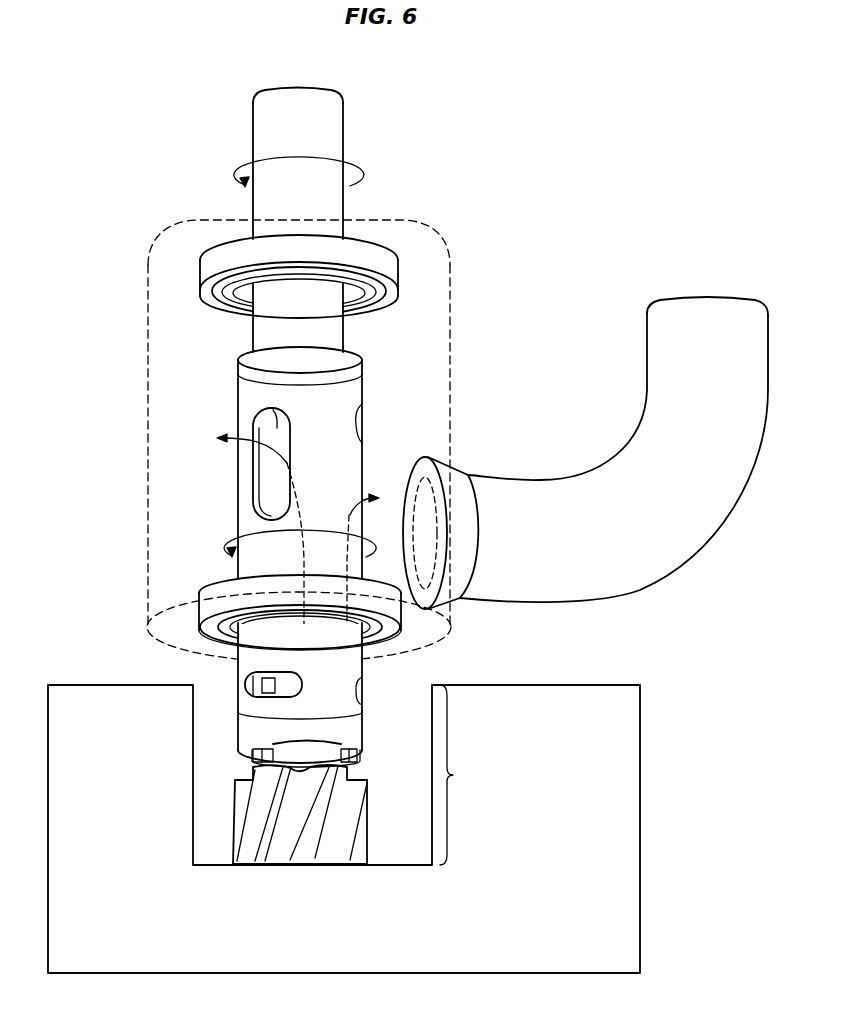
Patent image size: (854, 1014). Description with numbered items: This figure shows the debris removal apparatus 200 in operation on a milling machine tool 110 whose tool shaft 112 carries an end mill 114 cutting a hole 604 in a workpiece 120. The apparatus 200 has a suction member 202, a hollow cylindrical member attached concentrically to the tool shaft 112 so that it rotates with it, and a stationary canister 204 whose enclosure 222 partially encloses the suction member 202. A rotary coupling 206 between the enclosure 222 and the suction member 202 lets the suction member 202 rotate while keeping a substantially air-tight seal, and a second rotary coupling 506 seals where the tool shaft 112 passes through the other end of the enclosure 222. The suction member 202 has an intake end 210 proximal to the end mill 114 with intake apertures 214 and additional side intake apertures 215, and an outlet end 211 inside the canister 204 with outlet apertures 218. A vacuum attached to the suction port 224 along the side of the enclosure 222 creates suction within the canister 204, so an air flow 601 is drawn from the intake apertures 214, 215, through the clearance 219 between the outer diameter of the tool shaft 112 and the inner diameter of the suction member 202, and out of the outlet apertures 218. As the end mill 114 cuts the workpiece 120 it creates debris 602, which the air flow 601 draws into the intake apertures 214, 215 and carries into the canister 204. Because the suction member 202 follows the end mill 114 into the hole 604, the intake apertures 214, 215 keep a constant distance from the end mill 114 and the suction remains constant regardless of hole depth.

The cutting tool 110 is at (292, 86).
The tool shaft 112 is at (333, 131).
The end mill 114 is at (335, 835).
The workpiece 120 is at (587, 685).
The debris removal apparatus 200 is at (513, 169).
The suction member 202 is at (240, 655).
The canister 204 is at (111, 428).
The rotary coupling 206 is at (390, 640).
The intake end 210 is at (353, 737).
The outlet end 211 is at (352, 363).
The intake apertures 214 is at (300, 752).
The additional intake apertures 215 is at (357, 694).
The outlet apertures 218 is at (360, 410).
The clearance 219 is at (267, 646).
The enclosure 222 is at (452, 352).
The suction port 224 is at (465, 503).
The rotary coupling 506 is at (210, 270).
The air flow 601 is at (263, 443).
The debris 602 is at (209, 746).
The hole 604 is at (463, 775).